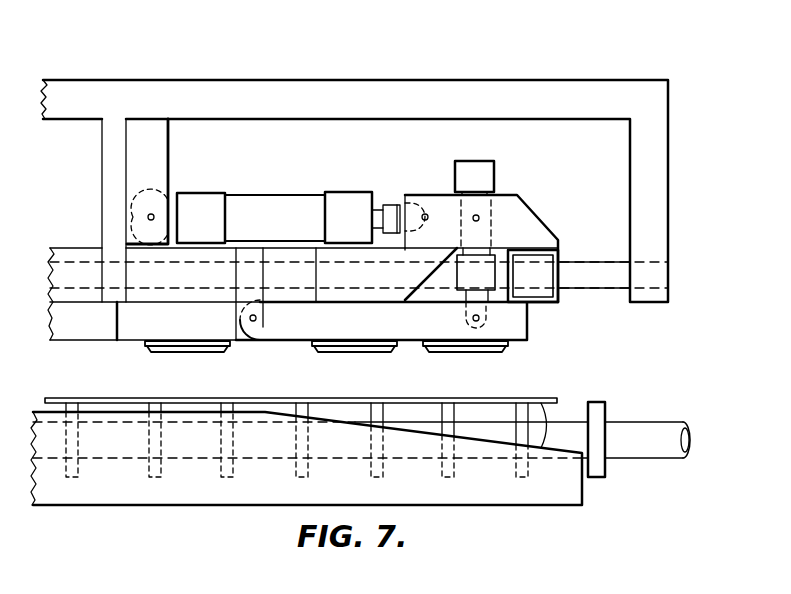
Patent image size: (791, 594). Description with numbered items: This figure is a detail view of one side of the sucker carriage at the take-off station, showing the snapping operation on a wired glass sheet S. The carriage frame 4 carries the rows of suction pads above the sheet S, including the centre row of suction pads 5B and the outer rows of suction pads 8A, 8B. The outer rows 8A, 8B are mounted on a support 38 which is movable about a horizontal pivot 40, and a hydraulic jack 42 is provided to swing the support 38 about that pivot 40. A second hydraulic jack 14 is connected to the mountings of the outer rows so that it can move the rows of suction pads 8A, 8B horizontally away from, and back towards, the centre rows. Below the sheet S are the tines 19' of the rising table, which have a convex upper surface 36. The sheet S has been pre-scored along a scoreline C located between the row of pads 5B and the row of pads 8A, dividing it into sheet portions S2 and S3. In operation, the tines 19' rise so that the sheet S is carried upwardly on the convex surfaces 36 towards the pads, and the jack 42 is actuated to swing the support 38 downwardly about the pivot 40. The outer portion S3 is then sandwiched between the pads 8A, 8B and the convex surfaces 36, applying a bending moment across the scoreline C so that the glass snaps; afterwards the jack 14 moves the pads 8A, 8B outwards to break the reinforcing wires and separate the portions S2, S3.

The frame 4 is at (386, 80).
The hydraulic jack 14 is at (260, 207).
The hydraulic jack 42 is at (483, 177).
The support 38 is at (410, 320).
The horizontal pivot 40 is at (257, 318).
The centre row of suction pads 5B is at (191, 355).
The row of suction pads 8A is at (351, 355).
The row of suction pads 8B is at (474, 355).
The wired glass sheet S is at (556, 393).
The sheet portion S2 is at (109, 398).
The outer sheet portion S3 is at (395, 400).
The scoreline C is at (255, 399).
The convex upper surface 36 is at (543, 401).
The tines 19' is at (306, 479).